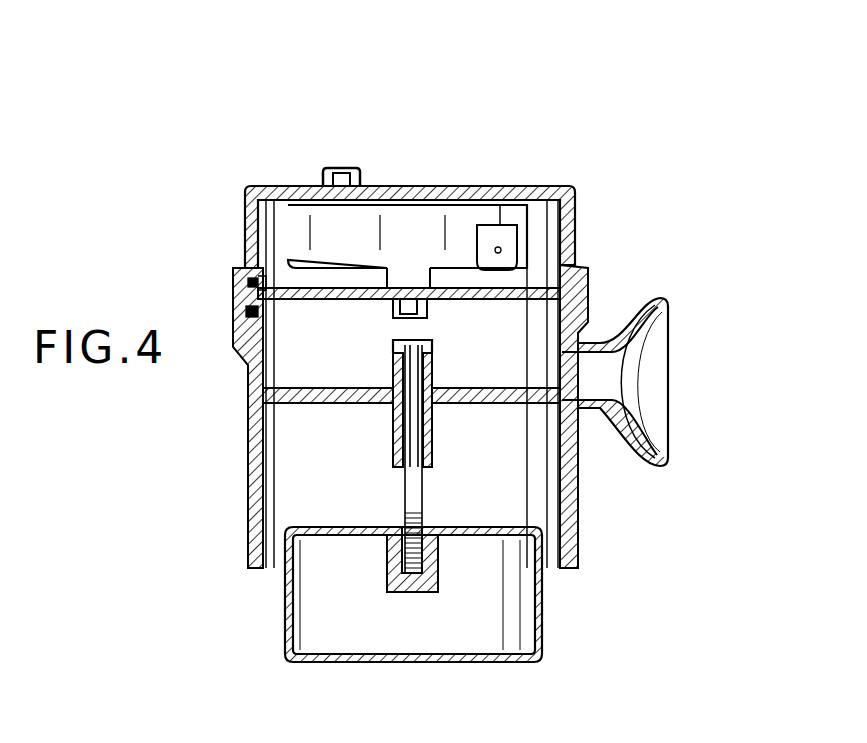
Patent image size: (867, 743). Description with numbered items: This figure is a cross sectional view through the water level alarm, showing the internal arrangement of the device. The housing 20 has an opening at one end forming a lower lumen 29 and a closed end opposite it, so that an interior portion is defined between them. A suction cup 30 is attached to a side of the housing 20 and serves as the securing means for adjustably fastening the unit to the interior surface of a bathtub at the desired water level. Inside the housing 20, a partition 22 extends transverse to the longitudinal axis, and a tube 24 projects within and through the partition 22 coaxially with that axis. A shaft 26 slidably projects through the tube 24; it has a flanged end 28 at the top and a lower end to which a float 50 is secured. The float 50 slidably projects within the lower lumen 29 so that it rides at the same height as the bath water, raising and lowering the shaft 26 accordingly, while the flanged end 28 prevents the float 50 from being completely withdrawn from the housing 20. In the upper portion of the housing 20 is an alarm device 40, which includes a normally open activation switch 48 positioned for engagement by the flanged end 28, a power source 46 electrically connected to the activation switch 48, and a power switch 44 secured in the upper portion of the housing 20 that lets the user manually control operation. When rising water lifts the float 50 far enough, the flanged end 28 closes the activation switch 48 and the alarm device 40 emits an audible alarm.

The housing 20 is at (250, 493).
The partition 22 is at (392, 390).
The tube 24 is at (393, 450).
The shaft 26 is at (420, 500).
The flanged end 28 is at (392, 340).
The lower lumen 29 is at (262, 570).
The suction cup 30 is at (653, 338).
The alarm device 40 is at (397, 217).
The power switch 44 is at (341, 168).
The power source 46 is at (518, 240).
The activation switch 48 is at (260, 279).
The float 50 is at (542, 613).